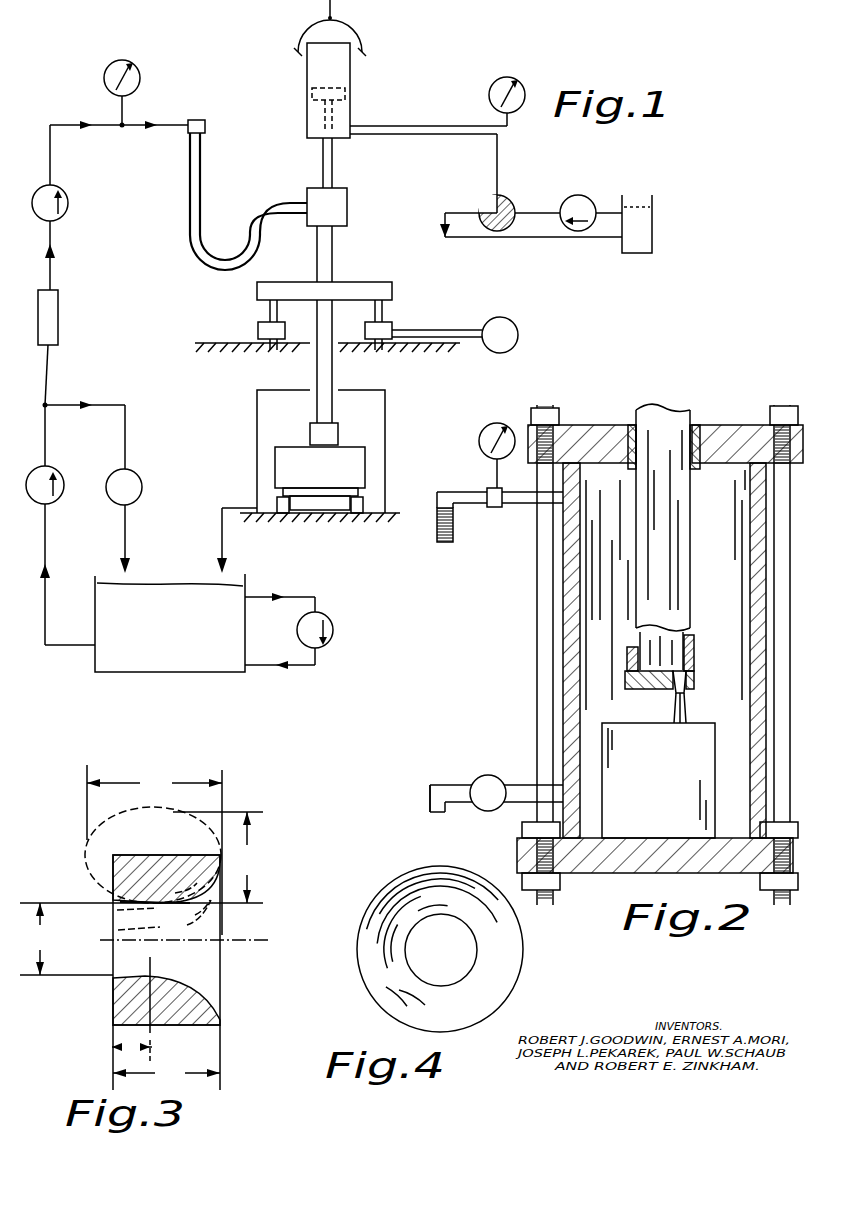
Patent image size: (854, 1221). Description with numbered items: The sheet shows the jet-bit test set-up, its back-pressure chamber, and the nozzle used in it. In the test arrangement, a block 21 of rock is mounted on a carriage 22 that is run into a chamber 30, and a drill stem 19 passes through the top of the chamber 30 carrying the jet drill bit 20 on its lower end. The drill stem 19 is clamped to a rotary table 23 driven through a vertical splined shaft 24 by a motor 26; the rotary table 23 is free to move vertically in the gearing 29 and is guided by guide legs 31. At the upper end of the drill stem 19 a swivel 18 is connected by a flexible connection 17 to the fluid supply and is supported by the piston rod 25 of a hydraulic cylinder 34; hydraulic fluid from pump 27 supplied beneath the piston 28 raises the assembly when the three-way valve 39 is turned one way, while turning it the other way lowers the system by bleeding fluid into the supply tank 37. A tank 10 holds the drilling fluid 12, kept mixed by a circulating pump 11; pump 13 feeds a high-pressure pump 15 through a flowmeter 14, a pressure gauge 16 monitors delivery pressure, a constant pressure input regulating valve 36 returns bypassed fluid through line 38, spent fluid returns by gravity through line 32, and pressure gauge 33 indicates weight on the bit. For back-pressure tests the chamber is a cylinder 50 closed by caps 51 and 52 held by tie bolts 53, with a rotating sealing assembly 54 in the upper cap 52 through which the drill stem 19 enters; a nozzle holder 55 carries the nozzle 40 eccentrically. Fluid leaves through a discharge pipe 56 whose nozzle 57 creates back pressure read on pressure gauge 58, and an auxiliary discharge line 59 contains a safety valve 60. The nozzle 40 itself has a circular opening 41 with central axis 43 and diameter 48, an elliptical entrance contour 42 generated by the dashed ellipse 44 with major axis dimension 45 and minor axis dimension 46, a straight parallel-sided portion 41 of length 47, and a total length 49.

In FIG. 1, the tank 10 is at (246, 582).
In FIG. 1, the pump 11 is at (333, 630).
In FIG. 1, the drilling fluid 12 is at (170, 609).
In FIG. 1, the pump 13 is at (60, 478).
In FIG. 1, the flowmeter 14 is at (58, 298).
In FIG. 1, the high-pressure pump 15 is at (68, 205).
In FIG. 1, the pressure gauge 16 is at (104, 78).
In FIG. 1, the flexible connection 17 is at (190, 212).
In FIG. 1, the swivel 18 is at (347, 212).
In FIG. 1, the drill stem 19 is at (334, 254).
In FIG. 2, the drill stem 19 is at (650, 418).
In FIG. 1, the jet drill bit 20 is at (340, 436).
In FIG. 1, the block of rock 21 is at (360, 462).
In FIG. 2, the block of rock 21 is at (658, 780).
In FIG. 1, the carriage 22 is at (364, 506).
In FIG. 1, the rotary table 23 is at (257, 286).
In FIG. 1, the splined shaft 24 is at (384, 312).
In FIG. 1, the piston rod 25 is at (323, 164).
In FIG. 1, the motor 26 is at (518, 332).
In FIG. 1, the pump 27 is at (578, 196).
In FIG. 1, the piston 28 is at (347, 97).
In FIG. 1, the gearing 29 is at (396, 330).
In FIG. 1, the chamber 30 is at (385, 404).
In FIG. 1, the guide legs 31 is at (260, 318).
In FIG. 1, the line 32 is at (222, 522).
In FIG. 1, the pressure gauge 33 is at (520, 82).
In FIG. 1, the hydraulic cylinder 34 is at (307, 78).
In FIG. 1, the constant pressure input regulating valve 36 is at (142, 490).
In FIG. 1, the supply tank 37 is at (652, 231).
In FIG. 1, the line 38 is at (130, 558).
In FIG. 1, the three-way valve 39 is at (488, 196).
In FIG. 2, the nozzle 40 is at (674, 696).
In FIG. 3, the nozzle 40 is at (108, 1006).
In FIG. 3, the circular opening 41 is at (126, 976).
In FIG. 4, the circular opening 41 is at (404, 951).
In FIG. 3, the entrance contour 42 is at (206, 900).
In FIG. 4, the entrance contour 42 is at (410, 888).
In FIG. 3, the central axis 43 is at (234, 944).
In FIG. 3, the generating ellipse 44 is at (95, 815).
In FIG. 3, the major axis dimension 45 is at (154, 850).
In FIG. 3, the minor axis dimension 46 is at (141, 857).
In FIG. 3, the length 47 is at (132, 1010).
In FIG. 3, the diameter 48 is at (66, 939).
In FIG. 3, the total length 49 is at (166, 1057).
In FIG. 2, the cylinder 50 is at (563, 616).
In FIG. 2, the bottom cap 51 is at (600, 870).
In FIG. 2, the upper cap 52 is at (753, 444).
In FIG. 2, the tie bolts 53 is at (537, 700).
In FIG. 2, the rotating sealing assembly 54 is at (698, 428).
In FIG. 2, the nozzle holder 55 is at (622, 650).
In FIG. 2, the discharge pipe 56 is at (517, 504).
In FIG. 2, the nozzle 57 is at (448, 542).
In FIG. 2, the pressure gauge 58 is at (484, 454).
In FIG. 2, the auxiliary discharge line 59 is at (446, 784).
In FIG. 2, the safety valve 60 is at (496, 774).